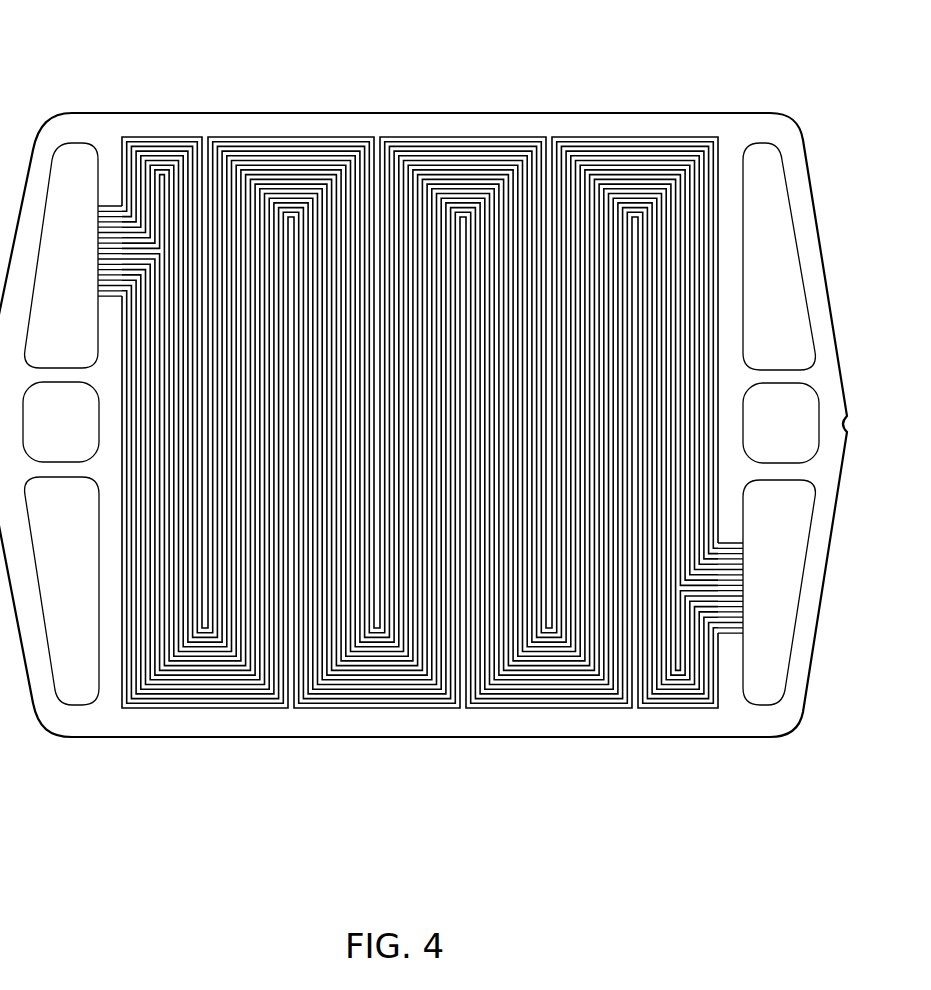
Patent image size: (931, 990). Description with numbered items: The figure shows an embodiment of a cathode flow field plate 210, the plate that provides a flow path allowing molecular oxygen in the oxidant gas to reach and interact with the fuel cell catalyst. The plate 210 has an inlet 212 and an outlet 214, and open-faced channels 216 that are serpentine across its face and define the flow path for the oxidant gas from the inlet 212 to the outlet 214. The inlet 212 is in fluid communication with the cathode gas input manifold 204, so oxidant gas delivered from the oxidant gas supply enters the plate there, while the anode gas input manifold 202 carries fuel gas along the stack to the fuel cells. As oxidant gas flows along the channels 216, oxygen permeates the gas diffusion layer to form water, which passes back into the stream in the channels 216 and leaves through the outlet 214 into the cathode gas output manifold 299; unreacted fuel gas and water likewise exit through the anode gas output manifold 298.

The cathode flow field plate 210 is at (195, 770).
The anode gas input manifold 202 is at (73, 680).
The cathode gas input manifold 204 is at (772, 630).
The inlet 212 is at (743, 570).
The outlet 214 is at (98, 265).
The open-faced channels 216 is at (502, 152).
The anode gas output manifold 298 is at (770, 208).
The cathode gas output manifold 299 is at (65, 197).